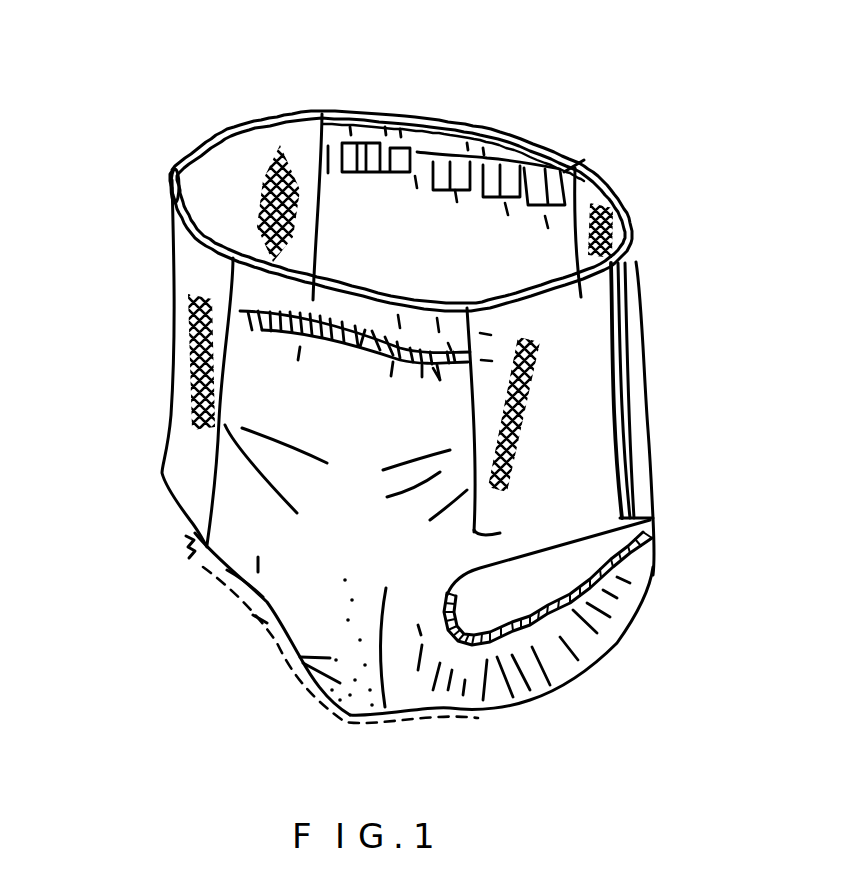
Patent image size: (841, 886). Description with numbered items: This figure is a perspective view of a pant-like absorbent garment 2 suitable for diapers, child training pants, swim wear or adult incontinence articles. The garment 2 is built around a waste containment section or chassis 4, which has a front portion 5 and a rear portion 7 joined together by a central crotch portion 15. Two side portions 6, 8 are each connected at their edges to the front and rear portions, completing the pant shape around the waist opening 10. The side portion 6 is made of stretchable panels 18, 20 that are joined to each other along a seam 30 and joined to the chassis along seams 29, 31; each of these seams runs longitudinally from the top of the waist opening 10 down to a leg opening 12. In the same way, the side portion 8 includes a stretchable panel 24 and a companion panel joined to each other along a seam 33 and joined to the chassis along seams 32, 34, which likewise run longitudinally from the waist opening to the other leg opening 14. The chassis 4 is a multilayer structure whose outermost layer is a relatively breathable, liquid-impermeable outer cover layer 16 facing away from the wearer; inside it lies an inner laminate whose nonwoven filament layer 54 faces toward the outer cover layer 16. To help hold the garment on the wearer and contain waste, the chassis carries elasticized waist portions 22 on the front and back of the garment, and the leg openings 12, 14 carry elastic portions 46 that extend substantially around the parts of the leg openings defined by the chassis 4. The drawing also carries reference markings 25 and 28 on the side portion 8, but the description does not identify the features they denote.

The absorbent garment 2 is at (92, 72).
The waste containment section 4 is at (277, 583).
The front portion 5 is at (365, 426).
The side portion 6 is at (224, 98).
The rear portion 7 is at (485, 147).
The side portion 8 is at (668, 425).
The waist opening 10 is at (405, 192).
The leg opening 12 is at (213, 537).
The leg opening 14 is at (523, 607).
The central (crotch) portion 15 is at (350, 715).
The outer cover layer 16 is at (317, 620).
The stretchable panel 18 is at (192, 264).
The stretchable panel 20 is at (269, 115).
The elasticized waist portions 22 is at (503, 170).
The stretchable panel 24 is at (506, 308).
The fastening region 25 is at (610, 196).
The side seam 28 is at (602, 337).
The seam 29 is at (322, 110).
The seam 30 is at (170, 166).
The seam 31 is at (233, 258).
The seam 32 is at (582, 172).
The seam 33 is at (618, 276).
The seam 34 is at (509, 519).
The elastic portions 46 is at (180, 513).
The nonwoven filament layer 54 is at (182, 523).